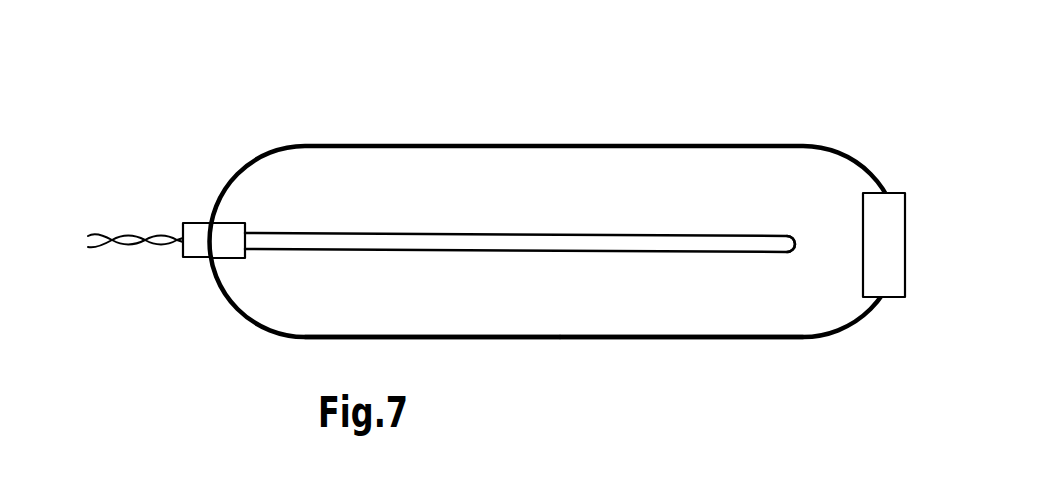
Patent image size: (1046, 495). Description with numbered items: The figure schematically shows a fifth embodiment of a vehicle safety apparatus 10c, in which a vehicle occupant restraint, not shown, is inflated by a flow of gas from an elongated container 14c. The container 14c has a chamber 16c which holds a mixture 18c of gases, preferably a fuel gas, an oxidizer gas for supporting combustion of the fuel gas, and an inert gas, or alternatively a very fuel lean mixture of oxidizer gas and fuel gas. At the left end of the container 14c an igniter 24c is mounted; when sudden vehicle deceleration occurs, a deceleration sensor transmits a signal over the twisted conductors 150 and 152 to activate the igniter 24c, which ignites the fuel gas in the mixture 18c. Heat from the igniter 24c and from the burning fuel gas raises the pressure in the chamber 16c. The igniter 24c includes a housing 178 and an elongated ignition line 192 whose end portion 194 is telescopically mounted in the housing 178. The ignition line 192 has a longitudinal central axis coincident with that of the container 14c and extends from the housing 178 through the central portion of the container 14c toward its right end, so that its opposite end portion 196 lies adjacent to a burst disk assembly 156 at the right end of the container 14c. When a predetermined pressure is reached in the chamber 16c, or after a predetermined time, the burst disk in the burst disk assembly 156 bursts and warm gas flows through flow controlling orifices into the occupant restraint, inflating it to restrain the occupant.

The vehicle safety apparatus 10c is at (558, 183).
The container 14c is at (529, 133).
The chamber 16c is at (657, 337).
The mixture of gases 18c is at (470, 310).
The igniter 24c is at (195, 208).
The conductor 150 is at (132, 233).
The conductor 152 is at (168, 249).
The burst disk assembly 156 is at (895, 273).
The housing 178 is at (227, 245).
The ignition line 192 is at (526, 212).
The end portion 194 is at (265, 238).
The end portion 196 is at (783, 237).